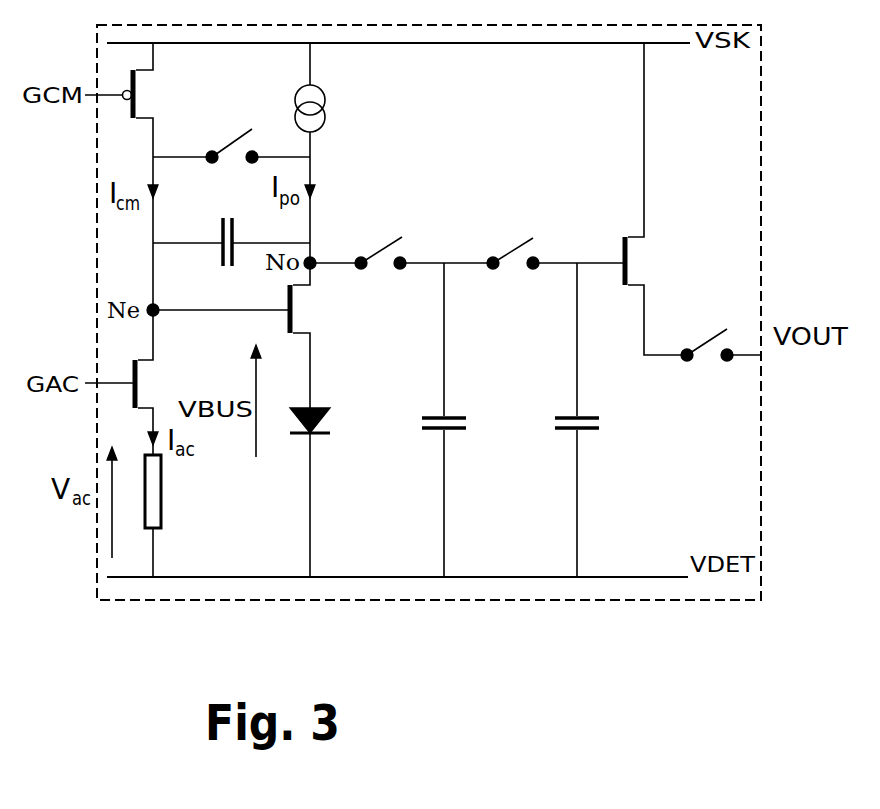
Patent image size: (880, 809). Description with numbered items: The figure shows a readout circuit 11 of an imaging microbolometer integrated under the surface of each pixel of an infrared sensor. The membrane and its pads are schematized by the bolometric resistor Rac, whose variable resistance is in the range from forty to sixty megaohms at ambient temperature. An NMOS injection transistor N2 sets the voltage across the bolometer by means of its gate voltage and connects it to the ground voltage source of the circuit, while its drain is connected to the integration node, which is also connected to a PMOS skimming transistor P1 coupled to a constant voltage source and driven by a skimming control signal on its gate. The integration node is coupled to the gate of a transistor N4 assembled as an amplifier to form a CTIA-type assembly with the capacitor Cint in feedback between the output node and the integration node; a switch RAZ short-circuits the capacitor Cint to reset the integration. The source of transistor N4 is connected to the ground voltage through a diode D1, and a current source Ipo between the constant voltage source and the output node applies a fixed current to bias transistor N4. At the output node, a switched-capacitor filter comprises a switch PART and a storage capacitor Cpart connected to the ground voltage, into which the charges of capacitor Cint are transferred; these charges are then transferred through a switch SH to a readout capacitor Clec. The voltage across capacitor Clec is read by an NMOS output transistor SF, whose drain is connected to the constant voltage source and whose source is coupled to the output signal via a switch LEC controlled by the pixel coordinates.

The readout circuit 11 is at (510, 600).
The skimming transistor P1 is at (154, 100).
The switch RAZ is at (231, 132).
The polarization current source Ipo is at (310, 153).
The integration capacitor Cint is at (231, 221).
The transistor N4 is at (320, 335).
The diode D1 is at (297, 405).
The injection transistor N2 is at (157, 382).
The bolometric resistor Rac is at (181, 491).
The switch PART is at (391, 240).
The switch SH is at (516, 240).
The storage capacitor Cpart is at (420, 420).
The readout capacitor Clec is at (556, 420).
The output transistor SF is at (656, 199).
The switch LEC is at (701, 327).